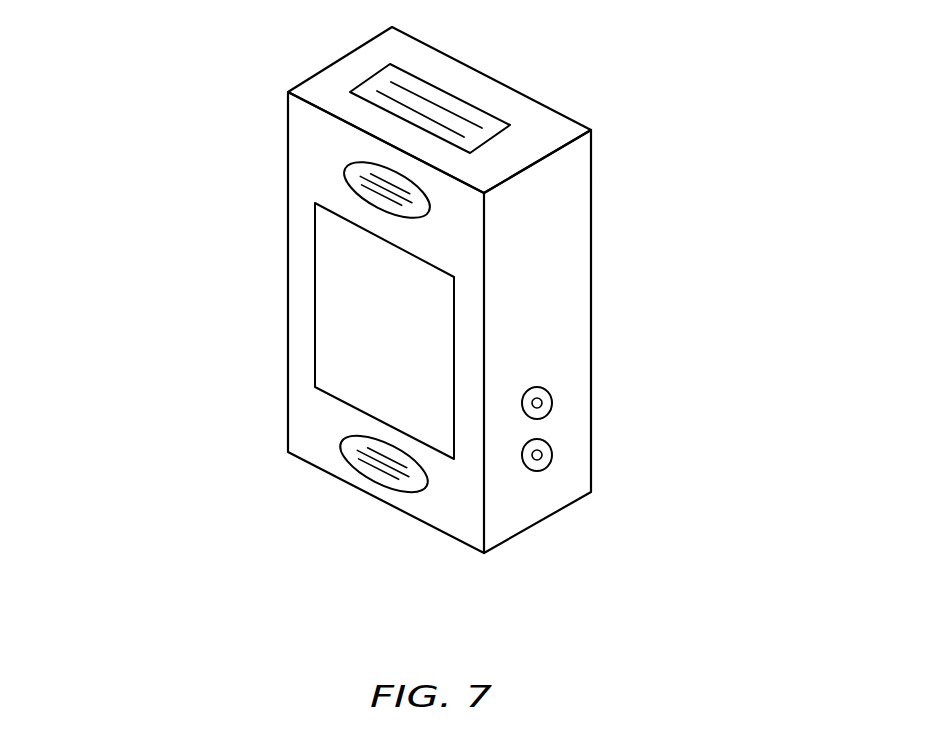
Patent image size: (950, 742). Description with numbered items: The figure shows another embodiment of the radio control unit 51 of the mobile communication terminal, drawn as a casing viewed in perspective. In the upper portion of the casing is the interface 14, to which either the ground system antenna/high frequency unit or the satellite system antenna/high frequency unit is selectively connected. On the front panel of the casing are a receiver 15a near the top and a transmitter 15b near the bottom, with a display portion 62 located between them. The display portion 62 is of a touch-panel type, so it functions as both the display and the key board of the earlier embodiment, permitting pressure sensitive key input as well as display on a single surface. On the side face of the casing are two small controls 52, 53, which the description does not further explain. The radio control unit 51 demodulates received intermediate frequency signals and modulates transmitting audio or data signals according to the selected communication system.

The interface 14 is at (450, 101).
The receiver 15a is at (352, 180).
The transmitter 15b is at (377, 477).
The radio control unit 51 is at (578, 243).
The control button 52 is at (548, 402).
The control button 53 is at (548, 455).
The display portion 62 is at (322, 322).